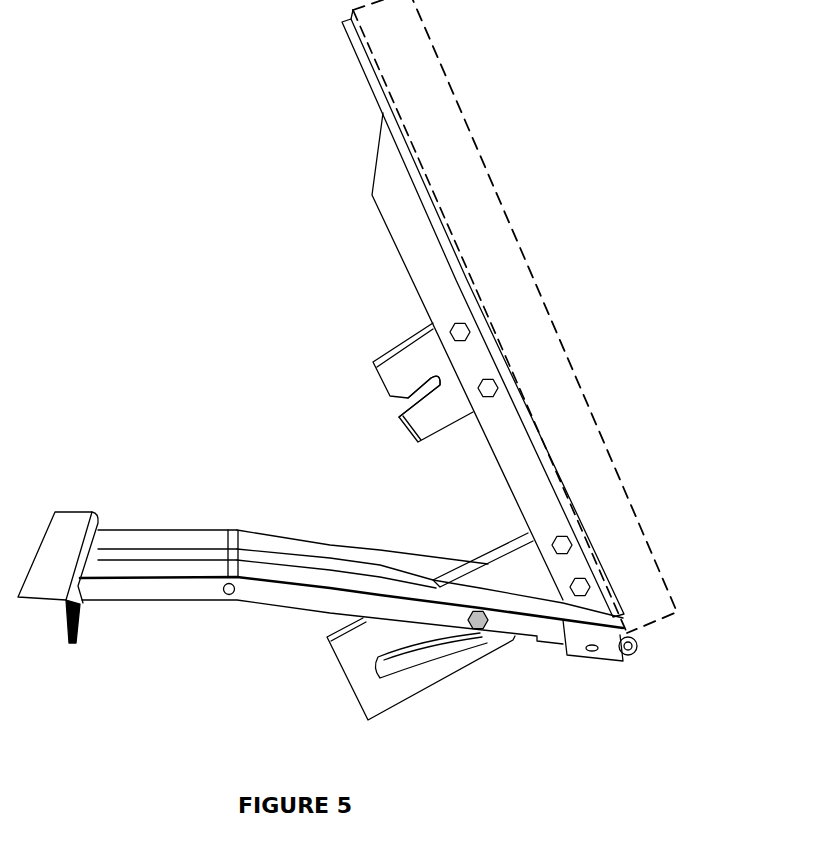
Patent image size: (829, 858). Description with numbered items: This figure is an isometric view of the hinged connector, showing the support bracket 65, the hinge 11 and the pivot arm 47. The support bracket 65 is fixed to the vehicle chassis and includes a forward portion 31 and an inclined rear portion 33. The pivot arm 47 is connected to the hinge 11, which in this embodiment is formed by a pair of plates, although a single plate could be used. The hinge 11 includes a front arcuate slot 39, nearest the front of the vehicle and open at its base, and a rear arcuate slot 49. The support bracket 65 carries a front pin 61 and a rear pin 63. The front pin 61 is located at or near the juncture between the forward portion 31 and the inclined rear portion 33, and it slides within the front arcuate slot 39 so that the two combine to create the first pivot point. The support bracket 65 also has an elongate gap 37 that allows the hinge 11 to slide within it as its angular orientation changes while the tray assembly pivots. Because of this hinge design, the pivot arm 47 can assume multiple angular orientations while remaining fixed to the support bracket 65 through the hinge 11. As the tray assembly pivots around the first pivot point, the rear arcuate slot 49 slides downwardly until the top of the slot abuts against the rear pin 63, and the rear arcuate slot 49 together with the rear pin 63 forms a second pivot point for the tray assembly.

The pivot arm 47 is at (384, 115).
The hinge 11 is at (404, 358).
The front arcuate slot 39 is at (412, 398).
The forward portion 31 is at (160, 540).
The front pin 61 is at (227, 567).
The inclined rear portion 33 is at (382, 585).
The elongate gap 37 is at (305, 562).
The support bracket 65 is at (222, 627).
The rear arcuate slot 49 is at (448, 653).
The rear pin 63 is at (487, 622).